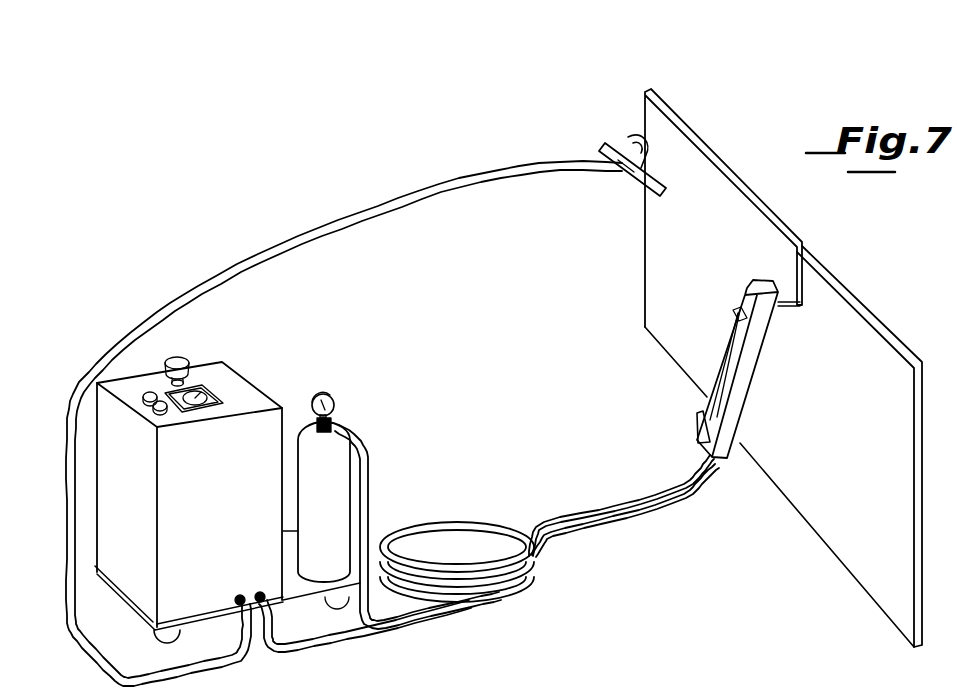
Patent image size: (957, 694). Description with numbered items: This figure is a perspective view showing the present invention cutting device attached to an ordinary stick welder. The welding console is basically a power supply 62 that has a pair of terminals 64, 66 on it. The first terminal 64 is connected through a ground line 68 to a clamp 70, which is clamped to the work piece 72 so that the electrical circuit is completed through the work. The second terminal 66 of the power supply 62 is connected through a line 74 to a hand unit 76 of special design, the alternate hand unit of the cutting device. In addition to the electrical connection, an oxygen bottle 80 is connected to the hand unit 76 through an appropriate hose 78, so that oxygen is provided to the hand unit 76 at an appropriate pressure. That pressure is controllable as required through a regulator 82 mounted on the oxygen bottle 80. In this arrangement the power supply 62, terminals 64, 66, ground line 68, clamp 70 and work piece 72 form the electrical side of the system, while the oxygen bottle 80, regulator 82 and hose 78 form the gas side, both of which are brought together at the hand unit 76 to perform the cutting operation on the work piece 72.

The power supply 62 is at (246, 379).
The terminal 64 is at (238, 594).
The terminal 66 is at (261, 590).
The ground line 68 is at (297, 244).
The clamp 70 is at (616, 145).
The work piece 72 is at (738, 172).
The line 74 is at (318, 640).
The hand unit 76 is at (745, 289).
The hose 78 is at (372, 489).
The oxygen bottle 80 is at (298, 426).
The regulator 82 is at (334, 400).